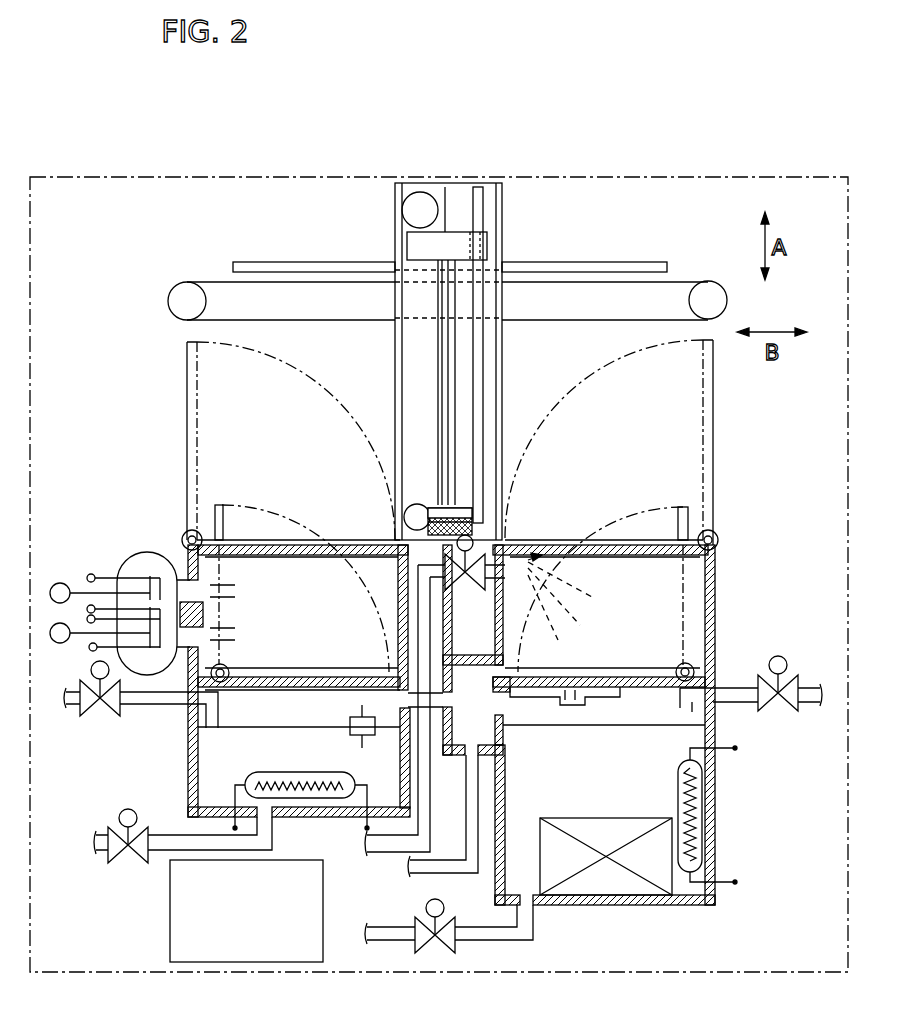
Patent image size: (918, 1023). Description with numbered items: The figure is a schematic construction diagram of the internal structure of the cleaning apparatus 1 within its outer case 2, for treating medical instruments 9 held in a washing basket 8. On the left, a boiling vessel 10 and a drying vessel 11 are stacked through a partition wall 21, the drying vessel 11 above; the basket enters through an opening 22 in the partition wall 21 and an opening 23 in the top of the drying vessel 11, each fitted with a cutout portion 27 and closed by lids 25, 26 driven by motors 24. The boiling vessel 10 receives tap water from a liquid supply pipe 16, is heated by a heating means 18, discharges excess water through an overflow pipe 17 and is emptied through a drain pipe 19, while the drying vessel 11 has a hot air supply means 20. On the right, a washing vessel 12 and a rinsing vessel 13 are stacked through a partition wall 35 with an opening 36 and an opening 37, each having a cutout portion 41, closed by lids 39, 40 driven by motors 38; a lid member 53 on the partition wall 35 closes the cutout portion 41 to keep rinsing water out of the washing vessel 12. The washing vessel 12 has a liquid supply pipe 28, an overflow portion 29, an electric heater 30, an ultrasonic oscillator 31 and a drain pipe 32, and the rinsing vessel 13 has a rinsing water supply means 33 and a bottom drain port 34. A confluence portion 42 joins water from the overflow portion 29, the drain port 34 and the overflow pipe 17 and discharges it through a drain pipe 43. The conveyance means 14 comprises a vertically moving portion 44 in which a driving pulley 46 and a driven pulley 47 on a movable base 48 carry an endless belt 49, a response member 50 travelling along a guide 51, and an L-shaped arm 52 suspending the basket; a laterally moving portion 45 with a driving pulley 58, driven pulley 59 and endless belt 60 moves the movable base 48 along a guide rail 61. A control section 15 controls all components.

The cleaning apparatus 1 is at (548, 160).
The outer case 2 is at (283, 177).
The washing basket 8 is at (470, 512).
The instruments 9 is at (470, 530).
The boiling vessel 10 is at (188, 762).
The drying vessel 11 is at (185, 545).
The washing vessel 12 is at (505, 812).
The rinsing vessel 13 is at (716, 580).
The conveyance means 14 is at (230, 197).
The control section 15 is at (180, 925).
The liquid supply pipe 16 is at (140, 710).
The overflow pipe 17 is at (425, 690).
The heating means 18 is at (318, 772).
The drain pipe 19 is at (150, 860).
The hot air supply means 20 is at (122, 560).
The partition wall 21 is at (385, 672).
The opening 22 is at (338, 690).
The opening 23 is at (342, 545).
The motors 24 is at (185, 535).
The lid 25 is at (300, 678).
The lid 26 is at (250, 540).
The cutout portion 27 is at (300, 558).
The liquid supply pipe 28 is at (738, 712).
The overflow portion 29 is at (505, 706).
The electric heater 30 is at (700, 818).
The ultrasonic oscillator 31 is at (618, 895).
The drain pipe 32 is at (497, 942).
The rinsing water supply means 33 is at (478, 588).
The drain port 34 is at (520, 668).
The partition wall 35 is at (715, 680).
The opening 36 is at (632, 692).
The opening 37 is at (650, 540).
The motors 38 is at (720, 538).
The lid 39 is at (600, 677).
The lid 40 is at (640, 540).
The cutout portion 41 is at (578, 540).
The confluence portion 42 is at (498, 745).
The drain pipe 43 is at (470, 873).
The vertically moving portion 44 is at (512, 402).
The laterally moving portion 45 is at (635, 250).
The driving pulley 46 is at (412, 208).
The driven pulley 47 is at (404, 515).
The movable base 48 is at (502, 220).
The endless belt 49 is at (407, 246).
The response member 50 is at (447, 232).
The guide 51 is at (483, 360).
The L-shaped arm 52 is at (438, 400).
The lid member 53 is at (575, 708).
The driving pulley 58 is at (180, 303).
The driven pulley 59 is at (708, 290).
The endless belt 60 is at (205, 282).
The guide rail 61 is at (578, 262).